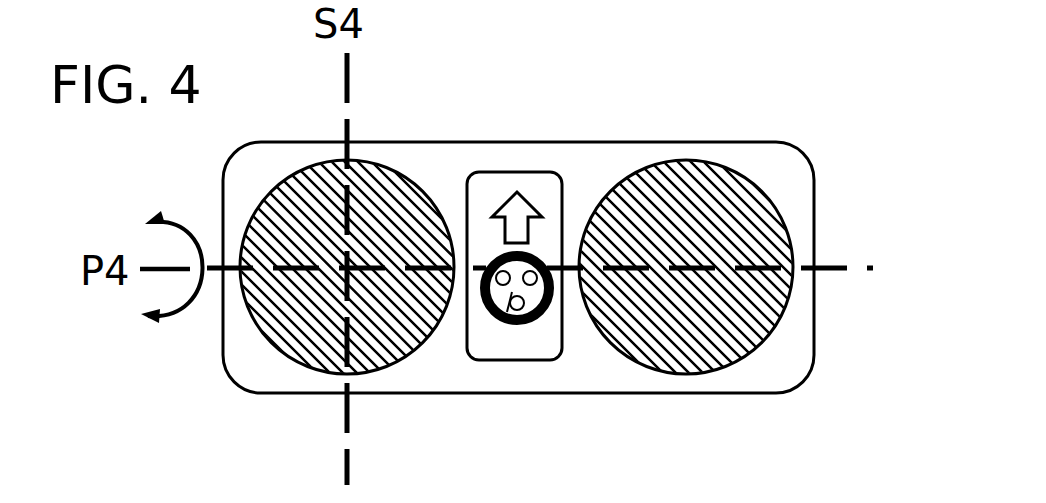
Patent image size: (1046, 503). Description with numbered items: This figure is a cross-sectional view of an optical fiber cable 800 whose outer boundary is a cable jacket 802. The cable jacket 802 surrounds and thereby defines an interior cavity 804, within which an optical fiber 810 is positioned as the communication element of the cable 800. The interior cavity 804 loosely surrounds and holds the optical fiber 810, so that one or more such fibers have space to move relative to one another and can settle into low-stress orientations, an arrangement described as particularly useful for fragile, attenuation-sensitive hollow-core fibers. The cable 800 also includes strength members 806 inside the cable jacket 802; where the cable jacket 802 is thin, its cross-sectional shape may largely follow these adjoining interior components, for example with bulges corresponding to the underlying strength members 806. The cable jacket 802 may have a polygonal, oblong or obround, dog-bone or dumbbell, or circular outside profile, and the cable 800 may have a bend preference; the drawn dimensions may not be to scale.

The optical fiber cable 800 is at (851, 106).
The cable jacket 802 is at (587, 157).
The interior cavity 804 is at (488, 343).
The strength member 806 is at (712, 325).
The optical fiber 810 is at (514, 322).